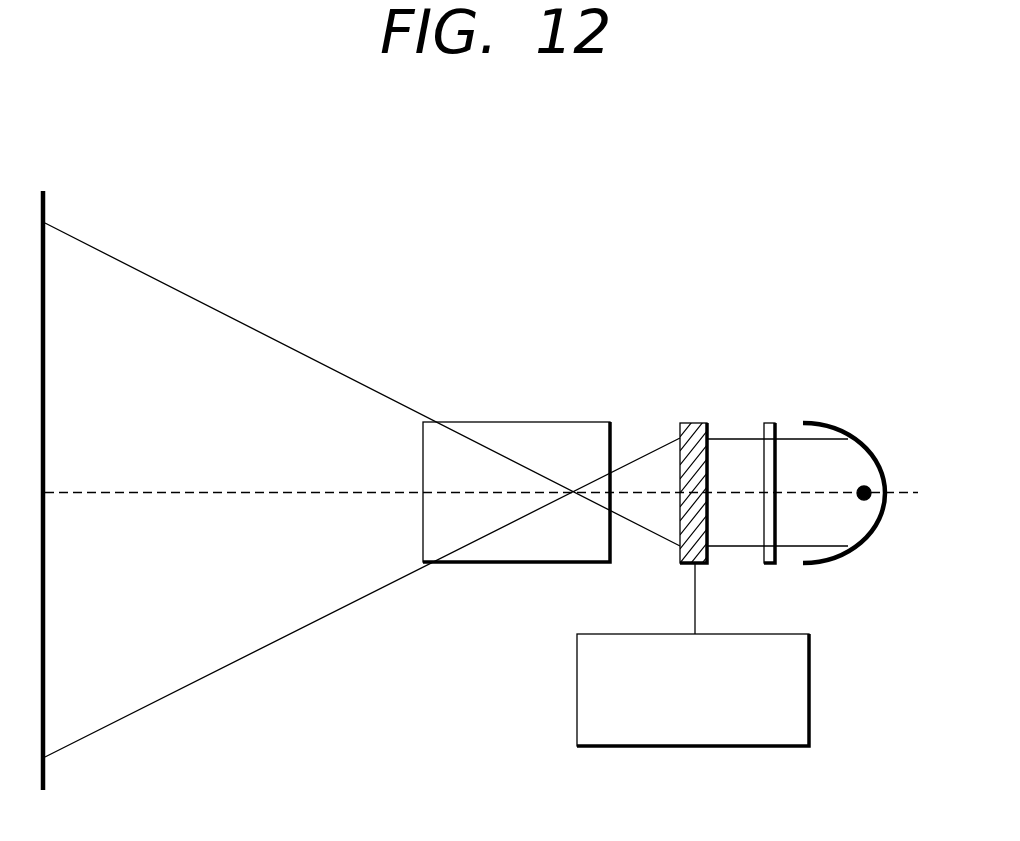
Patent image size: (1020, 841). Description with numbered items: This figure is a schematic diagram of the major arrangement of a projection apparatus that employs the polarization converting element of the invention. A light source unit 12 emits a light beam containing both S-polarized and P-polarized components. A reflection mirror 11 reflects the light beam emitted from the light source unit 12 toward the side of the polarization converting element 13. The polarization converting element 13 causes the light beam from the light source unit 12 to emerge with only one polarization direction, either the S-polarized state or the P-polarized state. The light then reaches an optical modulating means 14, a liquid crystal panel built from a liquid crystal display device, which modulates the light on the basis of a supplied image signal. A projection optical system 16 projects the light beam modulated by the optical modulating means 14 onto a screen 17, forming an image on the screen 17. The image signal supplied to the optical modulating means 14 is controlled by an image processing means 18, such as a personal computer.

The reflection mirror 11 is at (870, 450).
The light source unit 12 is at (868, 500).
The polarization converting element 13 is at (770, 423).
The optical modulating means 14 is at (695, 423).
The projection optical system 16 is at (550, 422).
The screen 17 is at (45, 212).
The image processing means 18 is at (812, 670).